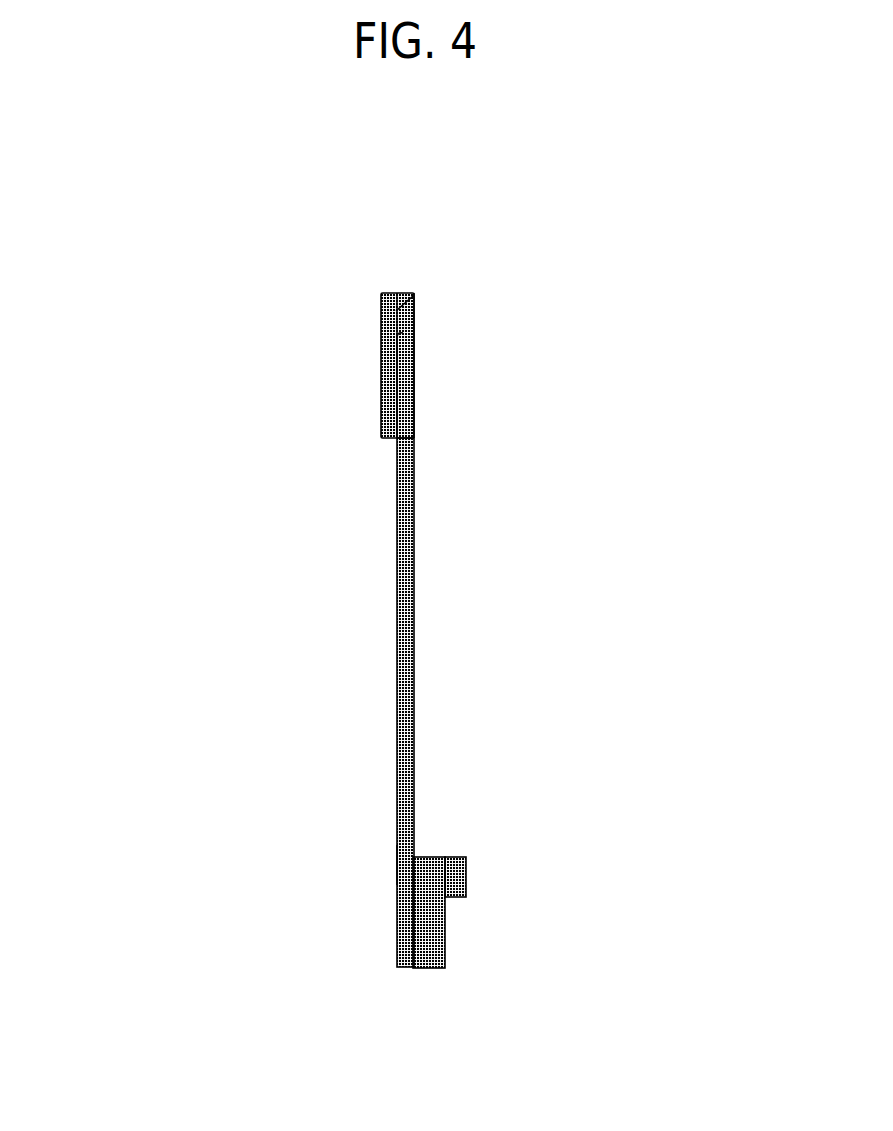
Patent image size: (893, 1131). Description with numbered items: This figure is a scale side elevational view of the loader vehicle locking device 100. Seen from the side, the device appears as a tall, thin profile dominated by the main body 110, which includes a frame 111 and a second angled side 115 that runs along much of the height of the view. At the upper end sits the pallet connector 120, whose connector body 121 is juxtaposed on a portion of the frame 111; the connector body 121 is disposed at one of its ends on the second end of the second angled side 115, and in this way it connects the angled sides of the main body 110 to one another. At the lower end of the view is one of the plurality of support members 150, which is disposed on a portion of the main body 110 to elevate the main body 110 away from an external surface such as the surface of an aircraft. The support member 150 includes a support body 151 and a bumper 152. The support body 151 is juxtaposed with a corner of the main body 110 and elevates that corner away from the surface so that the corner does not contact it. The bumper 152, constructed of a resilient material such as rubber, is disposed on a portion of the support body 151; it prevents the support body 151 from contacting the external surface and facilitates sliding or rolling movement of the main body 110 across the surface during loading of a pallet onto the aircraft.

The loader vehicle locking device 100 is at (608, 207).
The main body 110 is at (205, 855).
The frame 111 is at (397, 865).
The second angled side 115 is at (412, 605).
The pallet connector 120 is at (342, 278).
The connector body 121 is at (395, 312).
The support member 150 is at (513, 953).
The support body 151 is at (435, 943).
The bumper 152 is at (460, 873).